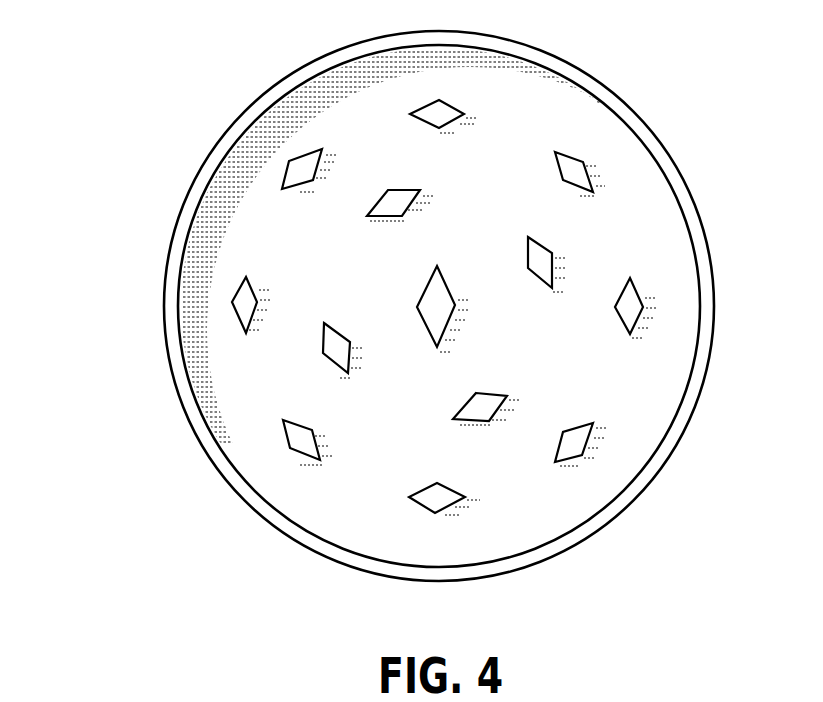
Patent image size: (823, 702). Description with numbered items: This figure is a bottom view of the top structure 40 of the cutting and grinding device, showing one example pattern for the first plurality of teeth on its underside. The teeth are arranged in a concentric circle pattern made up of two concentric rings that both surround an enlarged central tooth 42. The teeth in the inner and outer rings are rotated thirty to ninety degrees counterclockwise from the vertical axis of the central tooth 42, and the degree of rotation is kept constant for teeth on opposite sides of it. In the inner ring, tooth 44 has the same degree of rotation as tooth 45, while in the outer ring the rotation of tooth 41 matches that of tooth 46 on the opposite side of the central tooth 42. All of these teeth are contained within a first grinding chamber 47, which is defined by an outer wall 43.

The top structure 40 is at (142, 170).
The tooth 41 is at (568, 442).
The central tooth 42 is at (442, 312).
The outer wall 43 is at (280, 522).
The tooth 44 is at (538, 262).
The tooth 45 is at (340, 347).
The tooth 46 is at (303, 170).
The first grinding chamber 47 is at (640, 374).